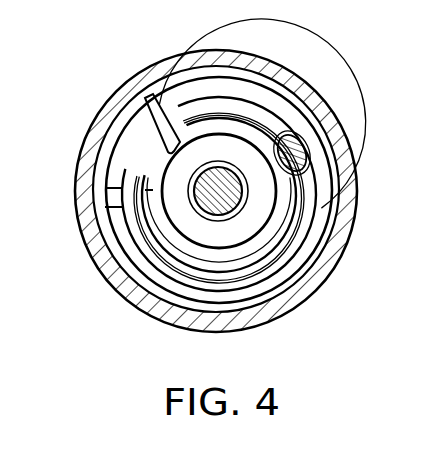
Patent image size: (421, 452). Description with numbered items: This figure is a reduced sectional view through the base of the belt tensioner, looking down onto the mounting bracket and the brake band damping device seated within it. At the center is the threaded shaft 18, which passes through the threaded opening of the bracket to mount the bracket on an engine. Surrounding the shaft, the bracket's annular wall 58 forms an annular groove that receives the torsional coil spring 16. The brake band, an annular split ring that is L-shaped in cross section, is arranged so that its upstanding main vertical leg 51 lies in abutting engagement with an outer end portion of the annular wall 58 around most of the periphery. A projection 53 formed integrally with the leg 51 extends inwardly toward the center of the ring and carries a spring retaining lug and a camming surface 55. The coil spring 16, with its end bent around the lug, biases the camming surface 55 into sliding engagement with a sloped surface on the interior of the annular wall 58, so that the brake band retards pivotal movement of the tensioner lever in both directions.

The torsional coil spring 16 is at (293, 225).
The threaded shaft 18 is at (237, 213).
The main vertical leg 51 is at (250, 72).
The projection 53 is at (183, 82).
The camming surface 55 is at (102, 205).
The annular wall 58 is at (320, 112).